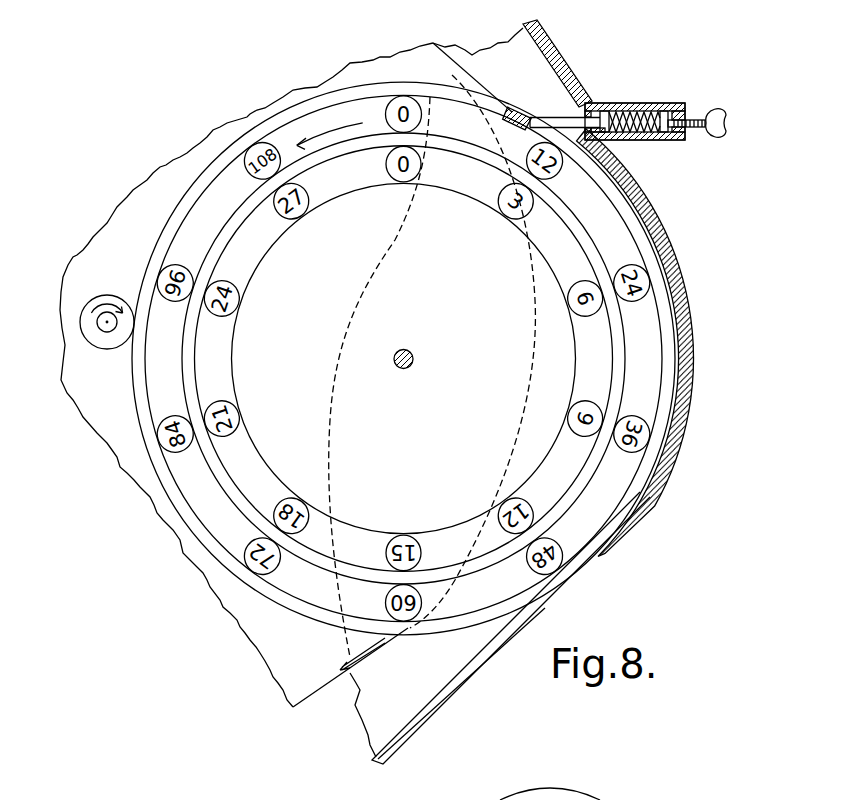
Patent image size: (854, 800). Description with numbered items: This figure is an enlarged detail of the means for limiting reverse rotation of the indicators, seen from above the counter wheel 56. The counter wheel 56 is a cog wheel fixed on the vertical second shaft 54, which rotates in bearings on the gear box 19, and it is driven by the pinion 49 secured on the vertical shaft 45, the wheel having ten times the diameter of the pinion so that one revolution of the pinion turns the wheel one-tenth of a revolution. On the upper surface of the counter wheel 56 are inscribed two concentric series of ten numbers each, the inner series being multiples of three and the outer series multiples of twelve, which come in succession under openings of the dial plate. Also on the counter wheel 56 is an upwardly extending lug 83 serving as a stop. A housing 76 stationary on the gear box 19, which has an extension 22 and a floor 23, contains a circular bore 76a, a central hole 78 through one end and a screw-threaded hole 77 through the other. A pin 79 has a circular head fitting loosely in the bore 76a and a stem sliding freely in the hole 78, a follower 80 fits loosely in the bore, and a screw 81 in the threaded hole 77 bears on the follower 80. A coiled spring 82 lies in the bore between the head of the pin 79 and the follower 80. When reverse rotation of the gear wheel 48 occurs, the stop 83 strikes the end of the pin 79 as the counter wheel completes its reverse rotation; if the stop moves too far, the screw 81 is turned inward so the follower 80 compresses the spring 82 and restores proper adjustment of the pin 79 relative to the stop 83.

The gear box 19 is at (548, 41).
The extension 22 is at (690, 296).
The floor 23 is at (511, 628).
The vertical shaft 45 is at (98, 324).
The gear wheel 48 is at (340, 680).
The pinion 49 is at (93, 347).
The second shaft 54 is at (441, 352).
The counter wheel 56 is at (155, 242).
The housing 76 is at (627, 103).
The circular bore 76a is at (594, 103).
The screw-threaded hole 77 is at (682, 141).
The central hole 78 is at (588, 139).
The pin 79 is at (565, 122).
The follower 80 is at (663, 139).
The screw 81 is at (687, 121).
The coiled spring 82 is at (637, 103).
The lug 83 is at (528, 117).